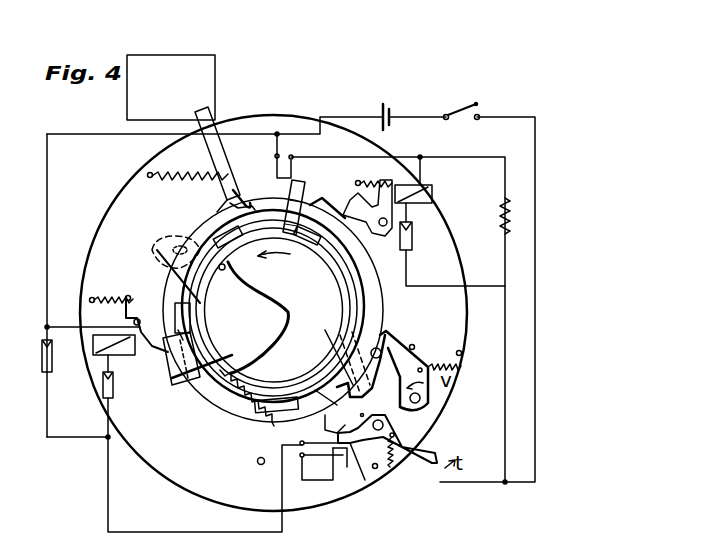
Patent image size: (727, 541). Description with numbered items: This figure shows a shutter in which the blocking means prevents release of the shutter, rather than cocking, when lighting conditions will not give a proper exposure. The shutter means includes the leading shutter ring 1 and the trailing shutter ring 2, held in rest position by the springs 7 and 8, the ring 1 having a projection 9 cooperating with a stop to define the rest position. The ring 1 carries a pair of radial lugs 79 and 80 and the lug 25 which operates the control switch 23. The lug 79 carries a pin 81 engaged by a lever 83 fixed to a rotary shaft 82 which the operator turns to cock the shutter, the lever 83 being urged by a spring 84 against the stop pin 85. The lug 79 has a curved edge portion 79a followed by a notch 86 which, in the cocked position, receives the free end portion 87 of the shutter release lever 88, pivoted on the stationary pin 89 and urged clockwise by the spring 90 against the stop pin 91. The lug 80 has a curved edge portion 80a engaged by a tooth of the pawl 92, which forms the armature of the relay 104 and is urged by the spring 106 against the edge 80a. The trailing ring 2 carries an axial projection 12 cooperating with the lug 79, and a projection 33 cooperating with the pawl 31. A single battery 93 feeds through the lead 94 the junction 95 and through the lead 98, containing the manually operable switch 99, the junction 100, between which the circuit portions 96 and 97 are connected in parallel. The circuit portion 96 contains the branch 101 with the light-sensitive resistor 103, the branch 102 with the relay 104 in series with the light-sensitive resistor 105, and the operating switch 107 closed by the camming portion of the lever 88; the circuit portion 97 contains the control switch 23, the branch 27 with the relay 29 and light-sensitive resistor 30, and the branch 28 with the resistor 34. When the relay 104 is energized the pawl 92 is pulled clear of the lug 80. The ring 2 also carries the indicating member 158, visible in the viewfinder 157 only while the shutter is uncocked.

The leading shutter ring 1 is at (317, 262).
The trailing shutter ring 2 is at (218, 404).
The spring 7 is at (240, 432).
The spring 8 is at (190, 178).
The projection 9 is at (165, 265).
The axial projection 12 is at (300, 382).
The control switch 23 is at (276, 170).
The lug 25 is at (303, 176).
The branch 27 is at (406, 270).
The branch 28 is at (505, 185).
The relay 29 is at (432, 193).
The light-sensitive resistor 30 is at (412, 240).
The pawl 31 is at (378, 240).
The projection 33 is at (336, 196).
The resistor 34 is at (497, 220).
The lug 79 is at (353, 353).
The curved edge portion 79a is at (365, 480).
The lug 80 is at (178, 386).
The curved edge portion 80a is at (168, 380).
The pin 81 is at (370, 350).
The rotary shaft 82 is at (420, 398).
The lever 83 is at (388, 333).
The spring 84 is at (461, 354).
The stop pin 85 is at (414, 345).
The notch 86 is at (358, 377).
The free end portion 87 is at (345, 465).
The shutter release lever 88 is at (407, 447).
The stationary pin 89 is at (385, 427).
The spring 90 is at (387, 450).
The stop pin 91 is at (363, 415).
The pawl 92 is at (145, 300).
The source of current 93 is at (391, 112).
The lead 94 is at (352, 112).
The junction 95 is at (280, 132).
The circuit portion 96 is at (47, 197).
The circuit portion 97 is at (505, 390).
The lead 98 is at (535, 131).
The manually operable switch 99 is at (478, 104).
The junction 100 is at (505, 484).
The branch 101 is at (47, 428).
The branch 102 is at (106, 439).
The light-sensitive resistor 103 is at (52, 360).
The relay 104 is at (105, 335).
The light-sensitive resistor 105 is at (113, 382).
The spring 106 is at (110, 298).
The operating switch 107 is at (318, 480).
The viewfinder 157 is at (193, 60).
The indicating member 158 is at (218, 153).